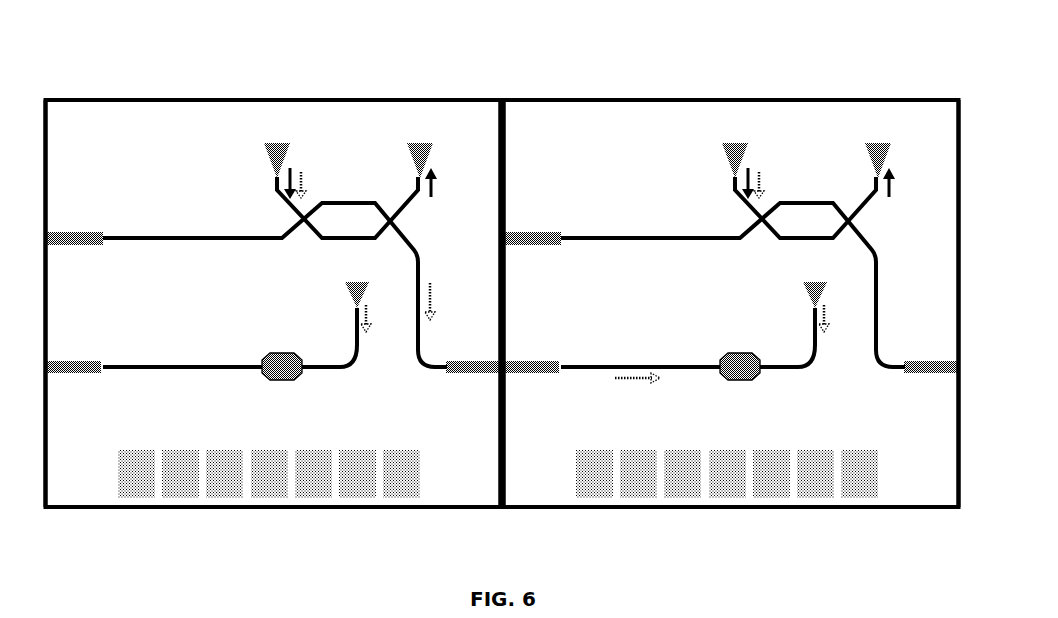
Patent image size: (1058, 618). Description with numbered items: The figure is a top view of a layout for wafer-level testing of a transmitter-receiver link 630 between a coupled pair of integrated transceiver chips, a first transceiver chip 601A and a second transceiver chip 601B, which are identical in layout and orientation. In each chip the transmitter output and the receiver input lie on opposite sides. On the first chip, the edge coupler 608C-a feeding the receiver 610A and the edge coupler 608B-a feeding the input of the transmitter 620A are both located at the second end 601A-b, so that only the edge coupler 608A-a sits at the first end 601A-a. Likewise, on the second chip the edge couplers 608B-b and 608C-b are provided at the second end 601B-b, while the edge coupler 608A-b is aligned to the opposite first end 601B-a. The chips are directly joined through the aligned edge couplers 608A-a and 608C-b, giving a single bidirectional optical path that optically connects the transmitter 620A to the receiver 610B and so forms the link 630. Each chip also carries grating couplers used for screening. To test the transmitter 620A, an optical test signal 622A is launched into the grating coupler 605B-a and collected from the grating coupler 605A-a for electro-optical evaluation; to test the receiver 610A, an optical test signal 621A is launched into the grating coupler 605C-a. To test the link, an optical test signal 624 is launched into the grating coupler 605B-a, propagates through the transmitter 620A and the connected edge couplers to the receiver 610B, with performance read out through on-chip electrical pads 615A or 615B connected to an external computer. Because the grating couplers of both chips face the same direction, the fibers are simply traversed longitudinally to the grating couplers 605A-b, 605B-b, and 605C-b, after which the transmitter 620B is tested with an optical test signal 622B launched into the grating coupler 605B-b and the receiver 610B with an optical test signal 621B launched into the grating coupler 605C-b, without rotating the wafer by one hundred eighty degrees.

The transmitter-receiver link 630 is at (872, 59).
The first transceiver chip 601A is at (108, 492).
The first end of the first transceiver chip 601A-a is at (480, 520).
The second end of the first transceiver chip 601A-b is at (54, 520).
The second transceiver chip 601B is at (563, 492).
The first end of the second transceiver chip 601B-a is at (947, 521).
The second end of the second transceiver chip 601B-b is at (518, 521).
The grating coupler 605A-a is at (412, 152).
The grating coupler 605B-a is at (268, 155).
The grating coupler 605C-a is at (346, 292).
The grating coupler 605A-b is at (870, 152).
The grating coupler 605B-b is at (726, 155).
The grating coupler 605C-b is at (804, 291).
The edge coupler 608A-a is at (465, 375).
The edge coupler 608B-a is at (75, 246).
The edge coupler 608C-a is at (80, 359).
The edge coupler 608A-b is at (935, 375).
The edge coupler 608B-b is at (546, 246).
The edge coupler 608C-b is at (550, 375).
The receiver 610A is at (270, 381).
The receiver 610B is at (736, 381).
The electrical pads 615A is at (118, 511).
The electrical pads 615B is at (577, 511).
The transmitter 620A is at (350, 189).
The transmitter 620B is at (808, 189).
The optical test signal 621A is at (362, 322).
The optical test signal 621B is at (826, 324).
The optical test signal 622A is at (282, 197).
The optical test signal 622B is at (752, 171).
The optical test signal 624 is at (302, 176).